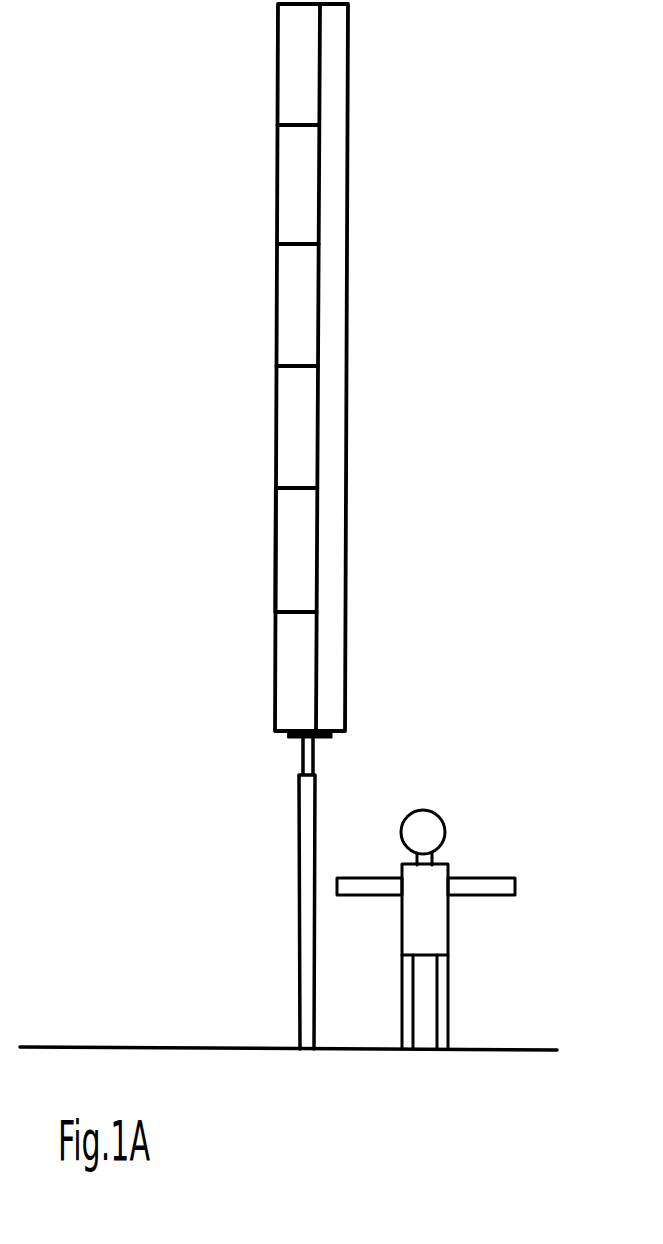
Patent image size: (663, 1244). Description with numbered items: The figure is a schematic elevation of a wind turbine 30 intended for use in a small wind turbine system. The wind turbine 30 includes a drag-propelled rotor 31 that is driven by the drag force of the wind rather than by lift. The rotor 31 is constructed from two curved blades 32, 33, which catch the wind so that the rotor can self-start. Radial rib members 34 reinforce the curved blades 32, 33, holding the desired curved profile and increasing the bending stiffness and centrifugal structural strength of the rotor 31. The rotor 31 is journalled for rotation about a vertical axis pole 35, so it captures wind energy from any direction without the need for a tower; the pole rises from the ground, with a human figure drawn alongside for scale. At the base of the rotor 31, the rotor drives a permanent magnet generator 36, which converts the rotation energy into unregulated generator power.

The wind turbine 30 is at (178, 104).
The drag-propelled rotor 31 is at (349, 656).
The curved blade 32 is at (346, 535).
The curved blade 33 is at (276, 561).
The radial rib member 34 is at (290, 487).
The vertical axis pole 35 is at (300, 825).
The permanent magnet generator 36 is at (330, 738).